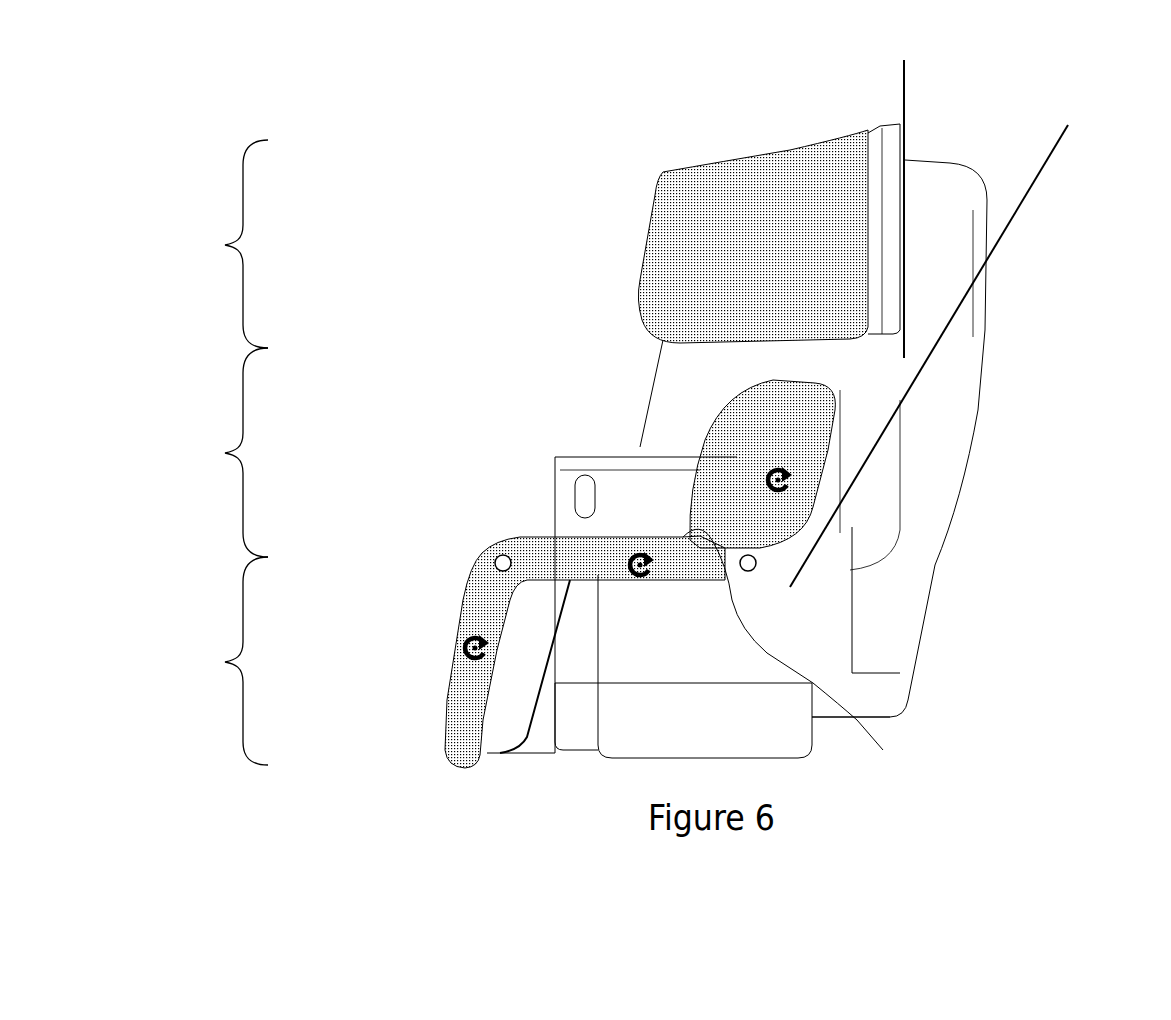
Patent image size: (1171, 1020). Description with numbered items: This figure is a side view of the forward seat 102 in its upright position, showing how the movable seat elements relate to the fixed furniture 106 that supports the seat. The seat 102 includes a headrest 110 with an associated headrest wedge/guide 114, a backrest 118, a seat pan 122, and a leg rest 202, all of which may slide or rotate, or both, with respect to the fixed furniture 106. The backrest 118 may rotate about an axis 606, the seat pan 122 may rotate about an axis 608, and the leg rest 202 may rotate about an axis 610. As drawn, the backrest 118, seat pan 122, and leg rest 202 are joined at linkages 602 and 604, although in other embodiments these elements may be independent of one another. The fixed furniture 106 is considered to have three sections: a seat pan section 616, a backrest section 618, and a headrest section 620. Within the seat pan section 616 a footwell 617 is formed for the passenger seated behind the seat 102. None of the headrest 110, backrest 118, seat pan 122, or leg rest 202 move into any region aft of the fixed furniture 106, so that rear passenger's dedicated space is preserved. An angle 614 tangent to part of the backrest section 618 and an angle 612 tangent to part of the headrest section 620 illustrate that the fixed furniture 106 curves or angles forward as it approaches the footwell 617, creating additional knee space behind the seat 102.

The seat 102 is at (748, 408).
The fixed furniture 106 is at (847, 367).
The headrest 110 is at (847, 227).
The headrest wedge/guide 114 is at (888, 150).
The backrest 118 is at (823, 423).
The seat pan 122 is at (802, 654).
The leg rest 202 is at (453, 677).
The linkage 602 is at (757, 567).
The linkage 604 is at (497, 557).
The axis 606 is at (787, 477).
The axis 608 is at (630, 558).
The axis 610 is at (462, 642).
The angle 612 is at (949, 113).
The angle 614 is at (1060, 143).
The seat pan section 616 is at (225, 661).
The footwell 617 is at (722, 667).
The backrest section 618 is at (225, 452).
The headrest section 620 is at (225, 244).